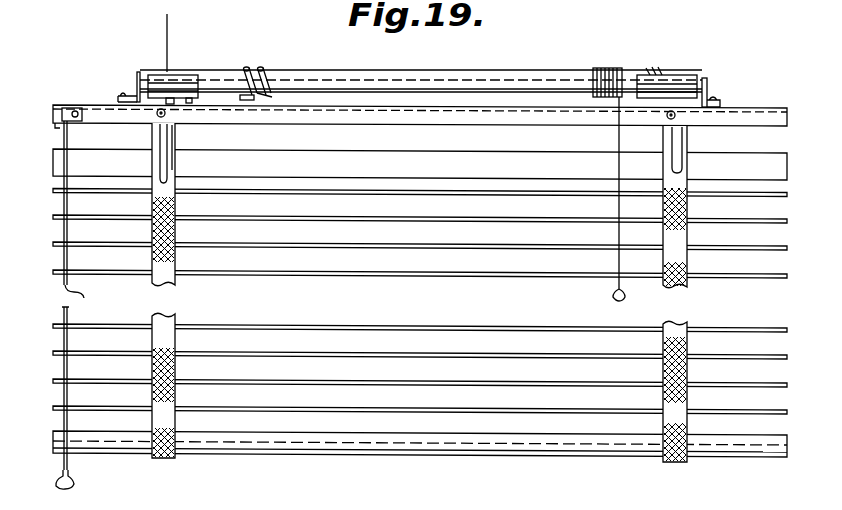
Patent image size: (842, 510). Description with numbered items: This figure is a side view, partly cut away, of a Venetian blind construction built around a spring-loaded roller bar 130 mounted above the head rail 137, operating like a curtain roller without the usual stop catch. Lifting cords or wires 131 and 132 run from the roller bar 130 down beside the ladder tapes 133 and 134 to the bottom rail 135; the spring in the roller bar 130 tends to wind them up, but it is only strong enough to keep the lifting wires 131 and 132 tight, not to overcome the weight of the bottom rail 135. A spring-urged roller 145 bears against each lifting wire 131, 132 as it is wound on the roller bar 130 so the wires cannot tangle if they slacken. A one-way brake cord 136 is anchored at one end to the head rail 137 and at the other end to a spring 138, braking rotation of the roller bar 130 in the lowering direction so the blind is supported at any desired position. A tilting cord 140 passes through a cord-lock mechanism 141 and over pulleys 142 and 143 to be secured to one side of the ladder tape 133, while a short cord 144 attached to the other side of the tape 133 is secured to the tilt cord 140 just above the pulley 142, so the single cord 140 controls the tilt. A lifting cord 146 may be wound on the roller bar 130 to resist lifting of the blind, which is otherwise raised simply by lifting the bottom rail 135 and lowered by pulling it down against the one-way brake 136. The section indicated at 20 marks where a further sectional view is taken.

The section line 20- 20 is at (203, 35).
The roller bar 130 is at (452, 78).
The lifting wire 131 is at (692, 76).
The lifting wire 132 is at (160, 72).
The ladder tape 133 is at (679, 322).
The ladder tape 134 is at (181, 313).
The bottom rail 135 is at (446, 441).
The one-way brake cord 136 is at (250, 67).
The head rail 137 is at (752, 116).
The spring 138 is at (272, 95).
The tilting cord 140 is at (69, 312).
The cord-lock mechanism 141 is at (58, 122).
The pulley 142 is at (158, 117).
The pulley 143 is at (668, 119).
The short cord 144 is at (170, 165).
The spring-urged roller 145 is at (186, 76).
The lifting cord 146 is at (617, 266).